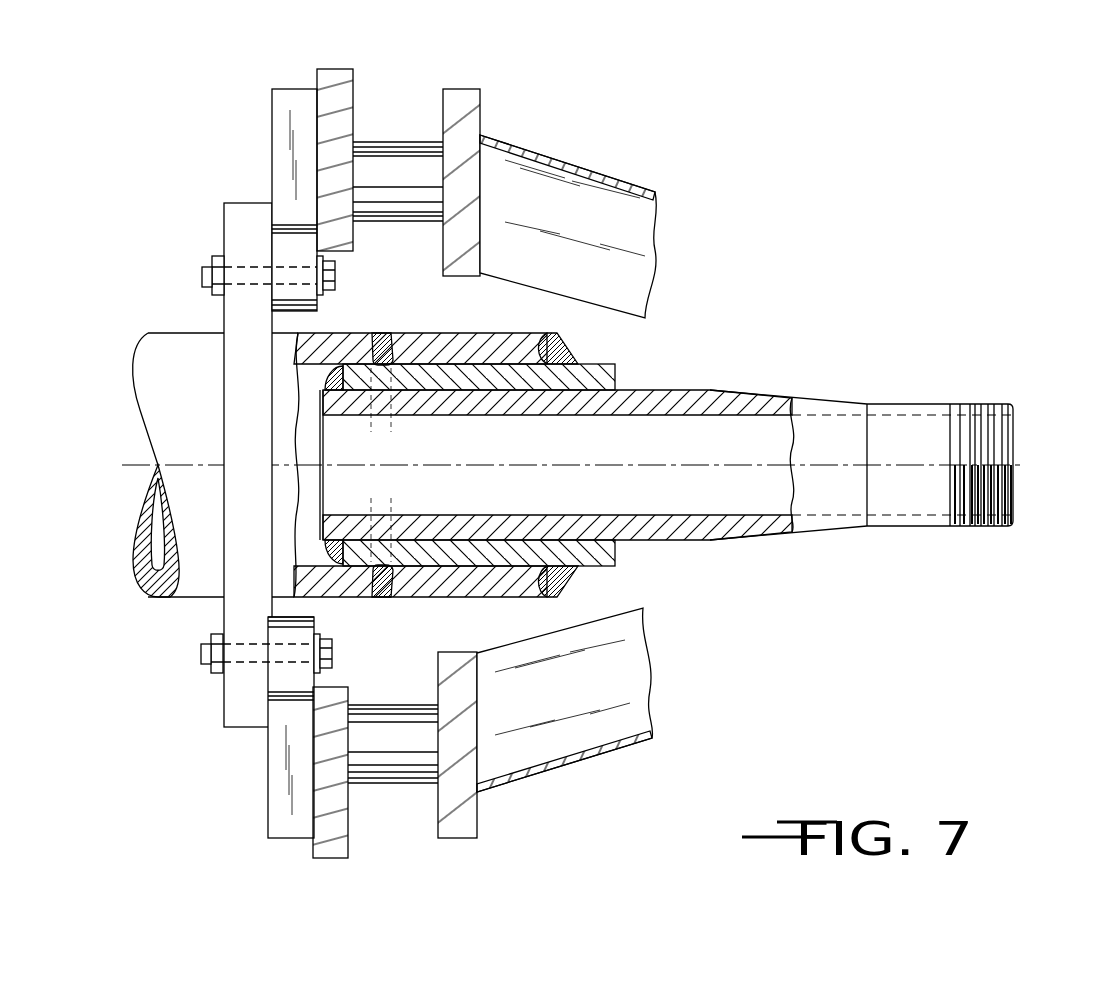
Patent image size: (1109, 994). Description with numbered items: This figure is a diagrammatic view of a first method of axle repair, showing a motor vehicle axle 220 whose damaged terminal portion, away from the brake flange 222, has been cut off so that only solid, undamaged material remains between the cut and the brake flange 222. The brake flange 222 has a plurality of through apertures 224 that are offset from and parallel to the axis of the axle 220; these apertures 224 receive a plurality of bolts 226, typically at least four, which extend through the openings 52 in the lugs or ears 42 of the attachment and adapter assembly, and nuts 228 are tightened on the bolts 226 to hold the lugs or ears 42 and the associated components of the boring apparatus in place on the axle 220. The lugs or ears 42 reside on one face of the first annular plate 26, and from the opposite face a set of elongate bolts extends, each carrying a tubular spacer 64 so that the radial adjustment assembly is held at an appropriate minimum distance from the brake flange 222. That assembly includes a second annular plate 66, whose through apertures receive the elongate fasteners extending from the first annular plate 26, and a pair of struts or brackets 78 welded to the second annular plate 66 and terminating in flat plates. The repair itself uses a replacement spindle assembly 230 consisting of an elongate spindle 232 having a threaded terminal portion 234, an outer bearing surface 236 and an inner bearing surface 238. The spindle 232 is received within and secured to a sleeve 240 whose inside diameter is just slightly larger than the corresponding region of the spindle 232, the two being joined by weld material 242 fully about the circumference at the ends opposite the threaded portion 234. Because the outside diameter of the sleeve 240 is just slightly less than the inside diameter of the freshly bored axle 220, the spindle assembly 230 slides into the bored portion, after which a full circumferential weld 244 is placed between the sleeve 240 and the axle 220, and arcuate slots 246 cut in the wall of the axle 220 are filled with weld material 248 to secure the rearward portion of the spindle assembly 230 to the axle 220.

The first annular plate 26 is at (337, 88).
The lugs or ears 42 is at (285, 113).
The openings 52 is at (285, 268).
The tubular spacer 64 is at (405, 162).
The second annular plate 66 is at (463, 112).
The struts or brackets 78 is at (575, 212).
The motor vehicle axle 220 is at (150, 352).
The brake flange 222 is at (247, 215).
The through apertures 224 is at (238, 643).
The bolts 226 is at (328, 645).
The nuts 228 is at (212, 668).
The replacement spindle assembly 230 is at (987, 566).
The elongate spindle 232 is at (1016, 445).
The threaded terminal portion 234 is at (988, 410).
The outer bearing surface 236 is at (893, 404).
The inner bearing surface 238 is at (712, 390).
The sleeve 240 is at (605, 373).
The weld material 242 is at (334, 372).
The full circumferential weld 244 is at (560, 354).
The arcuate slots 246 is at (392, 332).
The weld material 248 is at (378, 340).